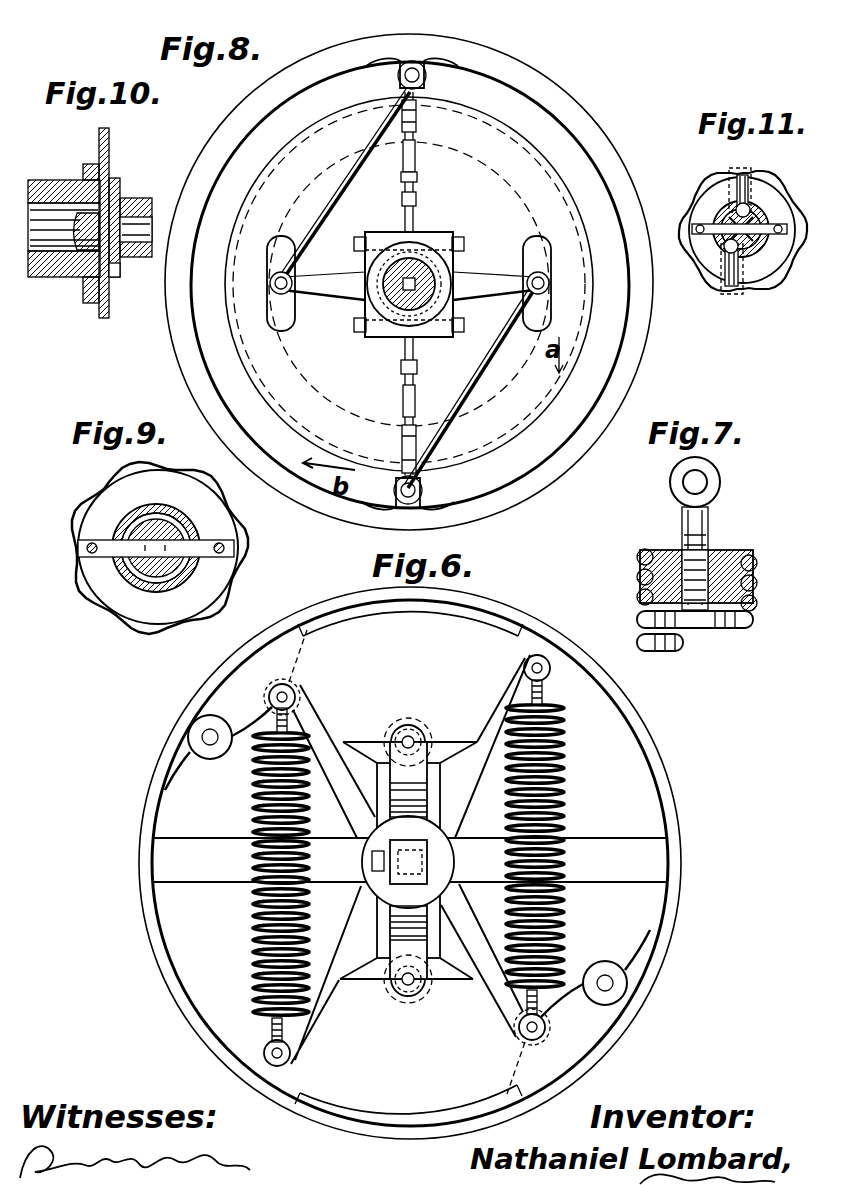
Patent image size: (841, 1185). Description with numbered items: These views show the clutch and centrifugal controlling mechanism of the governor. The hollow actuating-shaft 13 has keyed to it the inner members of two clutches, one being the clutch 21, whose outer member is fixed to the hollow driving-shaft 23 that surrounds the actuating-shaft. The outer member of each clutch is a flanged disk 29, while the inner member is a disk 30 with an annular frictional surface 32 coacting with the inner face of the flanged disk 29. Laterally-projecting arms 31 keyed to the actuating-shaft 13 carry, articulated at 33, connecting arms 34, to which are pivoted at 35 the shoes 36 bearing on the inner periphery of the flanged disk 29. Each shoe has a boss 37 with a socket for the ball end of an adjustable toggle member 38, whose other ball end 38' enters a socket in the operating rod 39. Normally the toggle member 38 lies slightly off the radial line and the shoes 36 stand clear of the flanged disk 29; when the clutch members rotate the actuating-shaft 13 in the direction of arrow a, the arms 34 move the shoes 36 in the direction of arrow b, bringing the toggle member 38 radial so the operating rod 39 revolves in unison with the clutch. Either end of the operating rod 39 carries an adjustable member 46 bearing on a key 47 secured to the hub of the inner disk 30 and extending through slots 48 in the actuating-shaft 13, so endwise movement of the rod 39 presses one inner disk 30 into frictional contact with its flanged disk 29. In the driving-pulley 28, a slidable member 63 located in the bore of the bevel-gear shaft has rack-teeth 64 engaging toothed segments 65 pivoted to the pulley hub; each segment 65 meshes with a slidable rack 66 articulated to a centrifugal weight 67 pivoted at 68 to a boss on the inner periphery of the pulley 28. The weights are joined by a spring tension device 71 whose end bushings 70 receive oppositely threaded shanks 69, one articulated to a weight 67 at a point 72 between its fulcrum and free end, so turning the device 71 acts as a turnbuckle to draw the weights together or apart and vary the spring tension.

In FIG. 8, the actuating-shaft 13 is at (430, 262).
In FIG. 10, the actuating-shaft 13 is at (140, 200).
In FIG. 11, the actuating-shaft 13 is at (711, 240).
In FIG. 9, the actuating-shaft 13 is at (140, 582).
In FIG. 8, the clutch 21 is at (438, 285).
In FIG. 10, the clutch 21 is at (122, 162).
In FIG. 10, the driving-shaft 23 is at (55, 181).
In FIG. 6, the driving-pulley 28 is at (656, 764).
In FIG. 8, the flanged disk 29 is at (557, 476).
In FIG. 10, the flanged disk 29 is at (90, 166).
In FIG. 10, the disk 30 is at (108, 140).
In FIG. 11, the disk 30 is at (703, 183).
In FIG. 9, the disk 30 is at (101, 507).
In FIG. 8, the laterally-projecting arms 31 is at (330, 277).
In FIG. 8, the annular frictional surface 32 is at (559, 190).
In FIG. 8, the articulation 33 is at (276, 286).
In FIG. 8, the connecting arms 34 is at (336, 212).
In FIG. 8, the pivot 35 is at (412, 75).
In FIG. 8, the shoes 36 is at (447, 64).
In FIG. 8, the boss 37 is at (415, 120).
In FIG. 8, the adjustable toggle member 38 is at (386, 278).
In FIG. 11, the adjustable toggle member 38 is at (748, 237).
In FIG. 11, the ball end 38' is at (745, 234).
In FIG. 8, the operating rod 39 is at (385, 300).
In FIG. 10, the operating rod 39 is at (48, 280).
In FIG. 11, the operating rod 39 is at (764, 255).
In FIG. 9, the operating rod 39 is at (166, 570).
In FIG. 8, the adjustable member 46 is at (421, 315).
In FIG. 10, the adjustable member 46 is at (150, 230).
In FIG. 11, the adjustable member 46 is at (716, 226).
In FIG. 8, the key 47 is at (460, 298).
In FIG. 10, the key 47 is at (120, 270).
In FIG. 11, the key 47 is at (786, 225).
In FIG. 9, the key 47 is at (100, 552).
In FIG. 10, the slots 48 is at (116, 196).
In FIG. 9, the slots 48 is at (200, 536).
In FIG. 6, the slidable member 63 is at (417, 862).
In FIG. 6, the rack-teeth 64 is at (402, 847).
In FIG. 6, the toothed segment 65 is at (395, 810).
In FIG. 6, the slidable rack 66 is at (418, 767).
In FIG. 6, the centrifugal weight 67 is at (482, 630).
In FIG. 6, the pivot 68 is at (208, 737).
In FIG. 7, the threaded shank 69 is at (710, 512).
In FIG. 6, the threaded shank 69 is at (276, 716).
In FIG. 7, the bushing 70 is at (725, 553).
In FIG. 7, the spring tension device 71 is at (752, 628).
In FIG. 6, the spring tension device 71 is at (563, 766).
In FIG. 6, the articulation point 72 is at (282, 690).